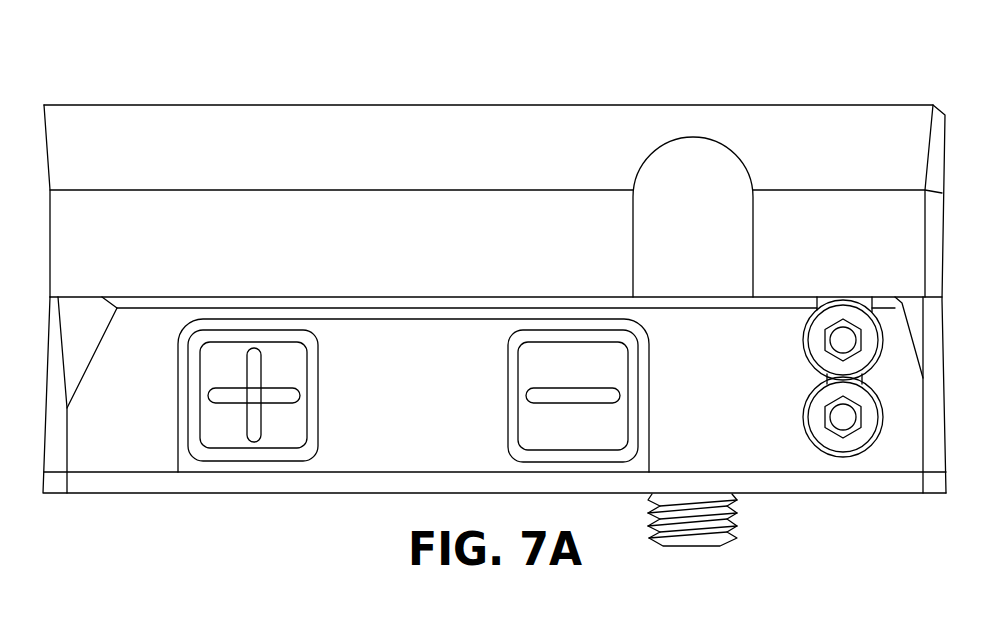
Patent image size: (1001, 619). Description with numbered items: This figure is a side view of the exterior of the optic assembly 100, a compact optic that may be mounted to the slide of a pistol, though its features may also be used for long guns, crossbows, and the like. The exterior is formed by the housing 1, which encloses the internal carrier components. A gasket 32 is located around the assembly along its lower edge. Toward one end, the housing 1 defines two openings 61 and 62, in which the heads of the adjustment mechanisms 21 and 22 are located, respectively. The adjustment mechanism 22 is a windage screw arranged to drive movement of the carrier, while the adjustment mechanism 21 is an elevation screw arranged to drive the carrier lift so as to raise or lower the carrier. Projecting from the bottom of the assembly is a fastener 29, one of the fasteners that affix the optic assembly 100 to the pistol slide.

The optic assembly 100 is at (494, 291).
The housing 1 is at (691, 104).
The gasket 32 is at (292, 494).
The opening 62 is at (802, 342).
The adjustment mechanism 22 is at (821, 352).
The opening 61 is at (802, 419).
The adjustment mechanism 21 is at (821, 430).
The fastener 29 is at (697, 546).